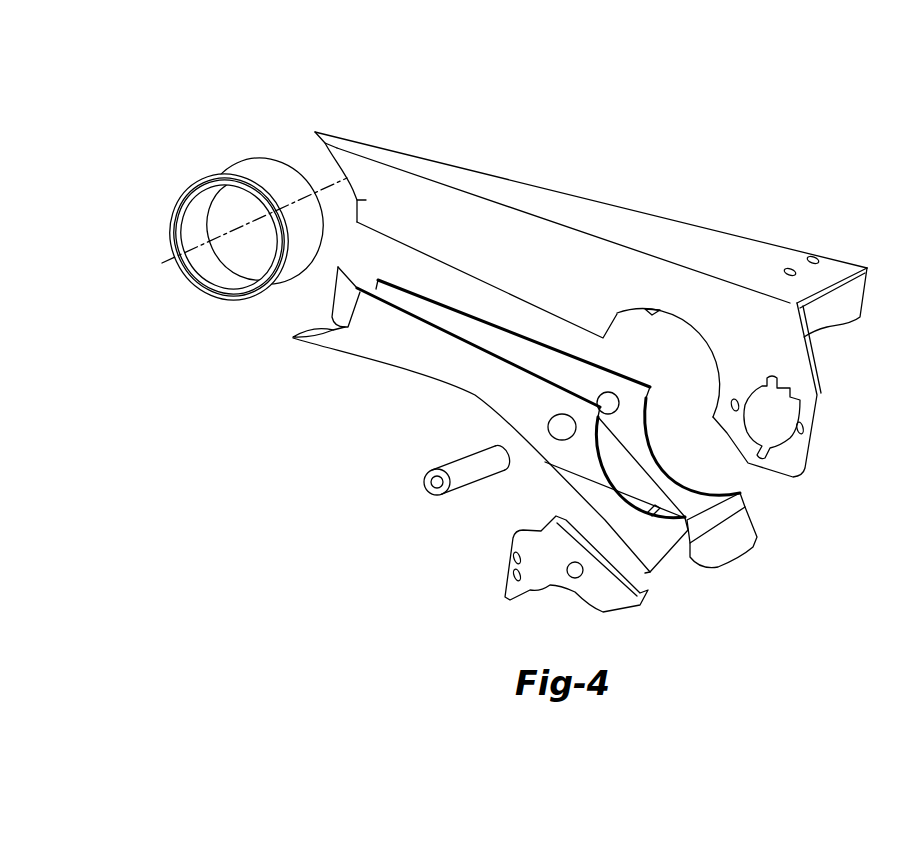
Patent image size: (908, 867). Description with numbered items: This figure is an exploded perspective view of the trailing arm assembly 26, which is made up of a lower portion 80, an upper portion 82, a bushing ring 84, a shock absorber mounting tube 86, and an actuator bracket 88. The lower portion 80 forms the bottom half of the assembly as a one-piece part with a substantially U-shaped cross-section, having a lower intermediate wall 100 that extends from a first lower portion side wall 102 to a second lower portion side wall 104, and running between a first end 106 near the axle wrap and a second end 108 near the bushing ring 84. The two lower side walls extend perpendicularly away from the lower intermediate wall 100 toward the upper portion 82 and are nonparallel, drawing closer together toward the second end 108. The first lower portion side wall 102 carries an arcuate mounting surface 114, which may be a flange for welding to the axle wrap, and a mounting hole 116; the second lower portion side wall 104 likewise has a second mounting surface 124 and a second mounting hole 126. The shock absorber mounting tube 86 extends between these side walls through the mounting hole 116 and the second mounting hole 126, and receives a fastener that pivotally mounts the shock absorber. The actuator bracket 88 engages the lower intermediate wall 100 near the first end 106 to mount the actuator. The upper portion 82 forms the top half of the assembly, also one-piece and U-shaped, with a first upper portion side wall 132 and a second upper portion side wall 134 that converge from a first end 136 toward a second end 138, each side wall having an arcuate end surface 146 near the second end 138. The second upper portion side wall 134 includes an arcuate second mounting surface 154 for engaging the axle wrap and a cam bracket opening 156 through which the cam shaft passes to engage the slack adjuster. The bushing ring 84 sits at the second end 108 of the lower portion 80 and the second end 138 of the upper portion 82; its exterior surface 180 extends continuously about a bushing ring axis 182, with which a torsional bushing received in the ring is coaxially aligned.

The trailing arm assembly 26 is at (566, 162).
The lower portion 80 is at (425, 362).
The upper portion 82 is at (644, 228).
The bushing ring 84 is at (220, 172).
The shock absorber mounting tube 86 is at (430, 480).
The actuator bracket 88 is at (505, 577).
The lower intermediate wall 100 is at (640, 488).
The first lower portion side wall 102 is at (727, 512).
The second lower portion side wall 104 is at (660, 533).
The first end 106 is at (760, 547).
The second end 108 is at (293, 336).
The mounting surface 114 is at (677, 480).
The mounting hole 116 is at (597, 395).
The second mounting surface 124 is at (590, 487).
The second mounting hole 126 is at (549, 416).
The first upper portion side wall 132 is at (872, 300).
The second upper portion side wall 134 is at (611, 293).
The first end 136 is at (867, 268).
The second end 138 is at (318, 130).
The arcuate end surface 146 is at (360, 206).
The second mounting surface 154 is at (690, 348).
The cam bracket opening 156 is at (776, 416).
The exterior surface 180 is at (262, 170).
The bushing ring axis 182 is at (207, 250).